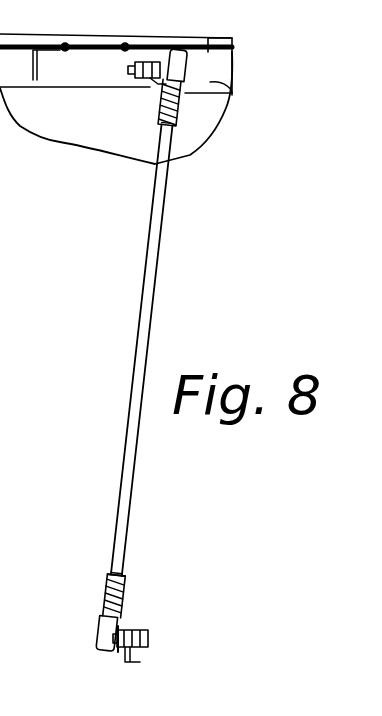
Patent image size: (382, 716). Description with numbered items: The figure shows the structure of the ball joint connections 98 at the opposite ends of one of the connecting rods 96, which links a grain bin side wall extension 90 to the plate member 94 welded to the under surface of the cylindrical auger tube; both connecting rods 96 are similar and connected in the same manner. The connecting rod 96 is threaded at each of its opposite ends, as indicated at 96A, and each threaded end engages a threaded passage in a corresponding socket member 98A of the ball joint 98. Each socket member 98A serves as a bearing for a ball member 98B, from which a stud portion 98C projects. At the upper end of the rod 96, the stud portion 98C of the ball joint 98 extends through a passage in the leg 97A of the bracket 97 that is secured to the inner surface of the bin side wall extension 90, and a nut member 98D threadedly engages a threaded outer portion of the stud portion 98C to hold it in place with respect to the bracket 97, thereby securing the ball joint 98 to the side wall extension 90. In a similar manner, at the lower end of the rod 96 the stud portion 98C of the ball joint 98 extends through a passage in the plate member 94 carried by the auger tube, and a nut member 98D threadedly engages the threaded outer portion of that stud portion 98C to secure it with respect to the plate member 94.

The grain bin side wall extension 90 is at (210, 36).
The plate member 94 is at (128, 624).
The connecting rod 96 is at (145, 296).
The threaded end 96A is at (205, 133).
The bracket 97 is at (106, 40).
The leg of bracket 97A is at (166, 38).
The ball joint connection 98 is at (100, 594).
The socket member 98A is at (160, 105).
The ball member 98B is at (210, 82).
The stud portion 98C is at (128, 70).
The nut member 98D is at (150, 84).